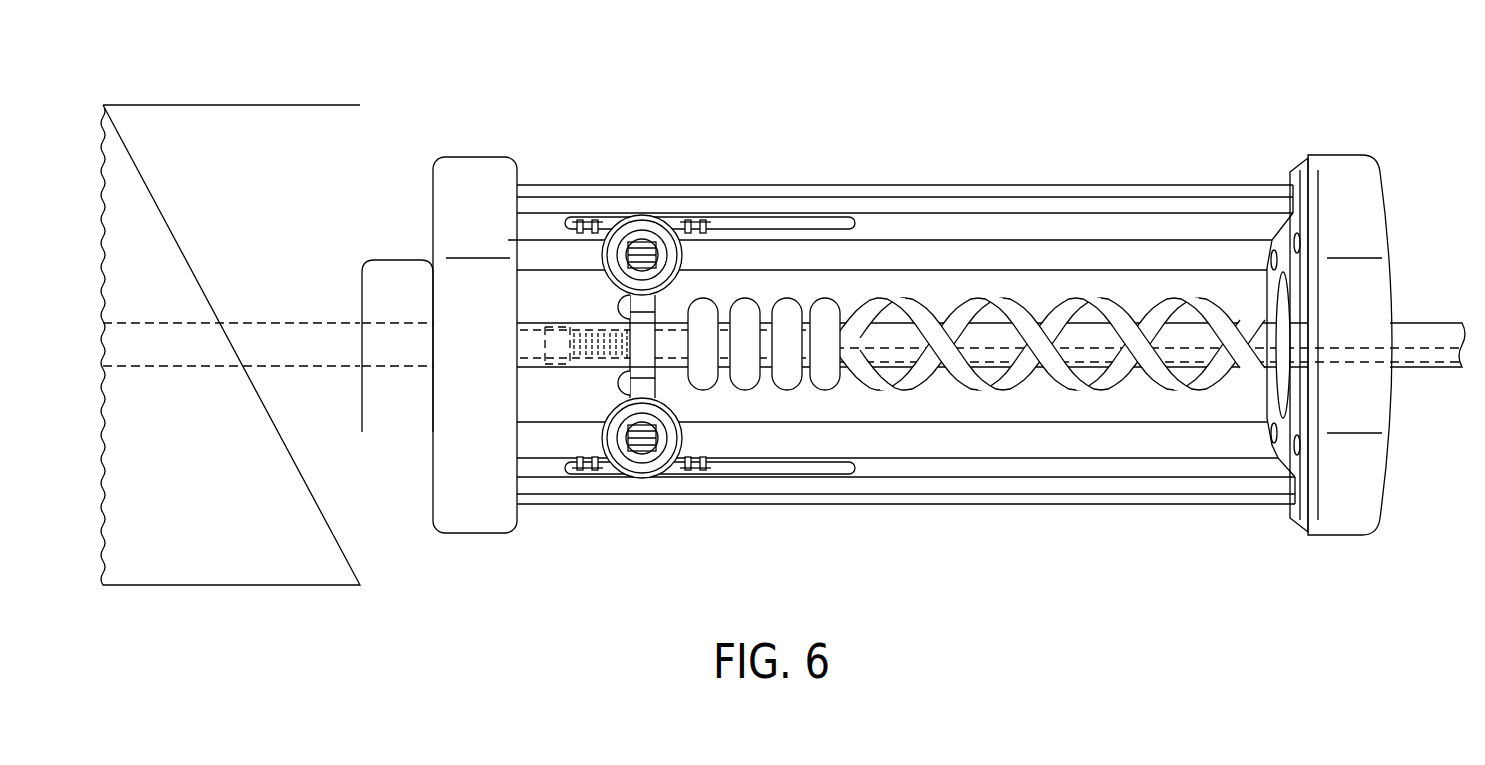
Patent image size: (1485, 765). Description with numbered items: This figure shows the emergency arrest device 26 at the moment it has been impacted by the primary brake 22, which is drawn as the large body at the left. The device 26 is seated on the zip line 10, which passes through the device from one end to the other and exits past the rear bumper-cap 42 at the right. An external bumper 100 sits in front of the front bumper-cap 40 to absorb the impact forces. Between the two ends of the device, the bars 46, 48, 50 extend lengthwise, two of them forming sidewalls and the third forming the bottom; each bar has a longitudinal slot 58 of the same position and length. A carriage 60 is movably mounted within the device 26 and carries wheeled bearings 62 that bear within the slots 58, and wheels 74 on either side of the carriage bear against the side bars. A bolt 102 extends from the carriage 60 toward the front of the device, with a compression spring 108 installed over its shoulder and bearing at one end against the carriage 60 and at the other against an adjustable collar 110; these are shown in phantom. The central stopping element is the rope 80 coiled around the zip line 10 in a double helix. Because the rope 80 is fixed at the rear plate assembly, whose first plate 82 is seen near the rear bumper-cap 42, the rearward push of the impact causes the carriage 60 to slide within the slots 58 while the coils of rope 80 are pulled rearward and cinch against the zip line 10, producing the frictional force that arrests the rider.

The zip line 10 is at (1423, 332).
The primary brake 22 is at (203, 135).
The emergency arrest device 26 is at (1034, 97).
The front bumper-cap 40 is at (473, 170).
The rear bumper-cap 42 is at (1337, 168).
The bar 46 is at (1010, 488).
The bar 48 is at (1090, 275).
The bar 50 is at (963, 198).
The longitudinal slot 58 is at (808, 217).
The carriage 60 is at (668, 369).
The wheeled bearing 62 is at (586, 220).
The wheel 74 is at (641, 215).
The rope 80 is at (1177, 380).
The first plate 82 is at (1292, 252).
The external bumper 100 is at (398, 262).
The bolt 102 is at (680, 330).
The compression spring 108 is at (597, 362).
The collar 110 is at (563, 330).